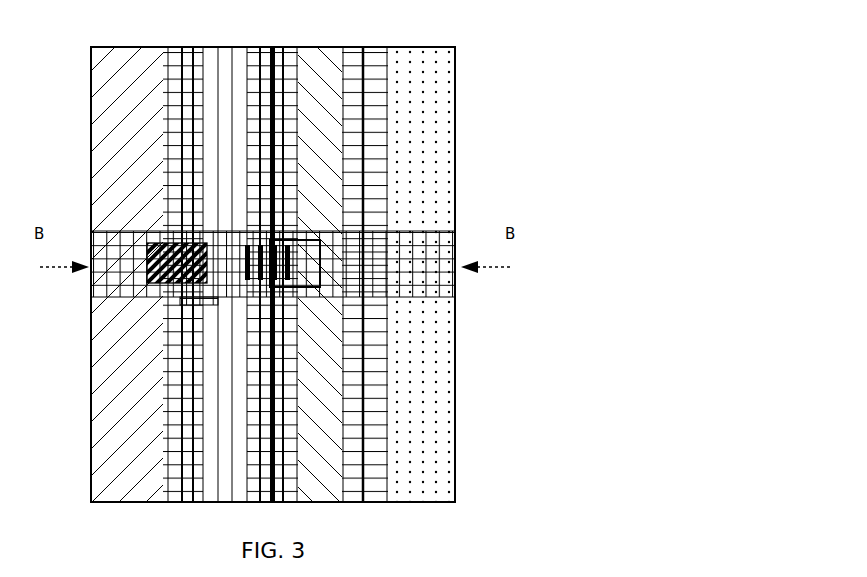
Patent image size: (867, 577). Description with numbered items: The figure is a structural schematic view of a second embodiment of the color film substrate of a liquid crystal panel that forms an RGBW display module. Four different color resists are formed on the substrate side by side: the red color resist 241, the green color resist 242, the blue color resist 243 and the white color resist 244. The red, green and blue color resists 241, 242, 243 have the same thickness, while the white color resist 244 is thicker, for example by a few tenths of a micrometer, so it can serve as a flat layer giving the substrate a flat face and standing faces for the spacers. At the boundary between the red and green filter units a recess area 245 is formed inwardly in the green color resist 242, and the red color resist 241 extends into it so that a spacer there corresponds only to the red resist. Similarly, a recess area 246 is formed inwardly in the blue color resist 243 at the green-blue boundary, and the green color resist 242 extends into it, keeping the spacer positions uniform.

The red color resist 241 is at (91, 100).
The green color resist 242 is at (214, 47).
The blue color resist 243 is at (318, 47).
The white color resist 244 is at (455, 100).
The recess area 245 is at (178, 190).
The recess area 246 is at (312, 240).